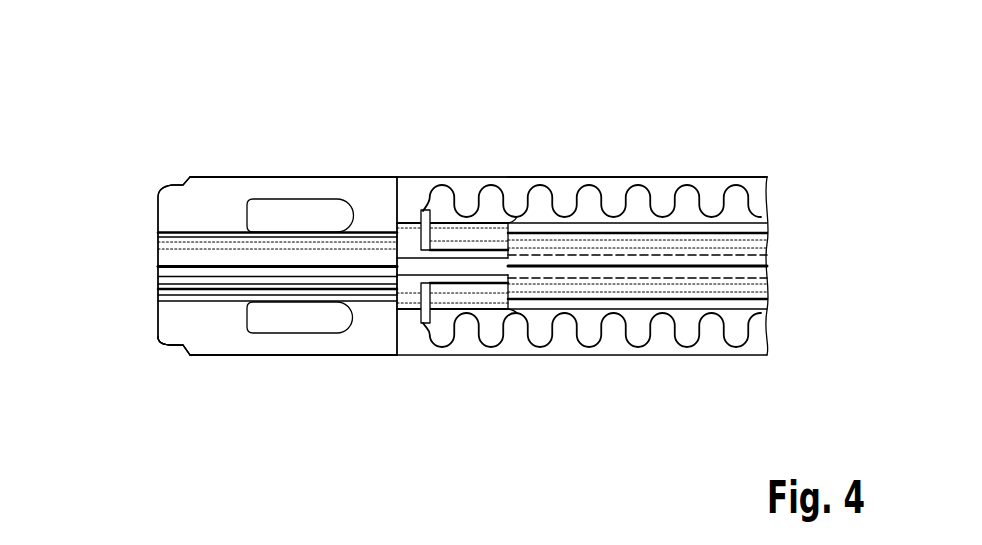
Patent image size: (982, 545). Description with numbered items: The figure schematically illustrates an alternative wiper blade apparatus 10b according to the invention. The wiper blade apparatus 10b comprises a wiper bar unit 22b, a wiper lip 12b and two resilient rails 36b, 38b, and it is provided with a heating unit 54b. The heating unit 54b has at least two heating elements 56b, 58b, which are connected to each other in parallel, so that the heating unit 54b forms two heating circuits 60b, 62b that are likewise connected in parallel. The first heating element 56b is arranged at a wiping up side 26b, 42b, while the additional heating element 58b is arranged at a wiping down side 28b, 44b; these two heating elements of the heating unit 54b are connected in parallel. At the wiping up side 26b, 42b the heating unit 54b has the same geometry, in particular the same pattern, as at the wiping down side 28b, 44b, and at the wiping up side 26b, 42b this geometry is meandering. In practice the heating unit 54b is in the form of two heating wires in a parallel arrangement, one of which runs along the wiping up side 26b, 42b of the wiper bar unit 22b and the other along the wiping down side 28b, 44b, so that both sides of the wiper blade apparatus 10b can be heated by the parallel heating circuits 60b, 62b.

The wiper blade apparatus 10b is at (745, 135).
The wiper lip 12b is at (758, 150).
The wiper bar unit 22b is at (350, 257).
The wiping up side 26b is at (157, 172).
The wiping up side 42b is at (157, 172).
The wiping down side 28b is at (157, 363).
The wiping down side 44b is at (157, 363).
The resilient rail 36b is at (213, 205).
The resilient rail 38b is at (213, 323).
The heating unit 54b is at (511, 105).
The first heating element 56b is at (606, 187).
The additional heating element 58b is at (607, 340).
The heating circuit 60b is at (421, 211).
The heating circuit 62b is at (653, 280).